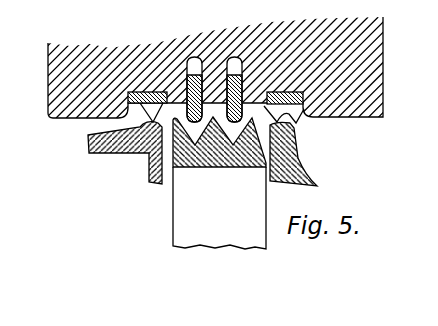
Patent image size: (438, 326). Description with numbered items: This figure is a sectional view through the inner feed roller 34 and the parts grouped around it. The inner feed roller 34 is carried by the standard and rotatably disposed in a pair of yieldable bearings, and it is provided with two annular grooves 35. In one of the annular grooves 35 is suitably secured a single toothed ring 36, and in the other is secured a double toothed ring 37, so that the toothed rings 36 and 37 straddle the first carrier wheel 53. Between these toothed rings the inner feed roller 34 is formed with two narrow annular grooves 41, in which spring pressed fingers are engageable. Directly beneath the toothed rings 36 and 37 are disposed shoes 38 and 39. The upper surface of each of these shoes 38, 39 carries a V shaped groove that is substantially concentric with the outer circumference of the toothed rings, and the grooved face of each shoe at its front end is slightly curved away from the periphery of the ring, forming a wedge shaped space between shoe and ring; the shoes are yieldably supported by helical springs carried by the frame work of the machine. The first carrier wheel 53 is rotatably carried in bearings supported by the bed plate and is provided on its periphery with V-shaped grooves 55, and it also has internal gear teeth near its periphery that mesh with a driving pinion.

The inner feed roller 34 is at (88, 57).
The annular grooves 35 is at (124, 114).
The single toothed ring 36 is at (155, 113).
The double toothed ring 37 is at (294, 113).
The shoe 38 is at (303, 169).
The shoe 39 is at (149, 164).
The narrow annular grooves 41 is at (193, 60).
The first carrier wheel 53 is at (178, 218).
The V-shaped grooves 55 is at (232, 132).